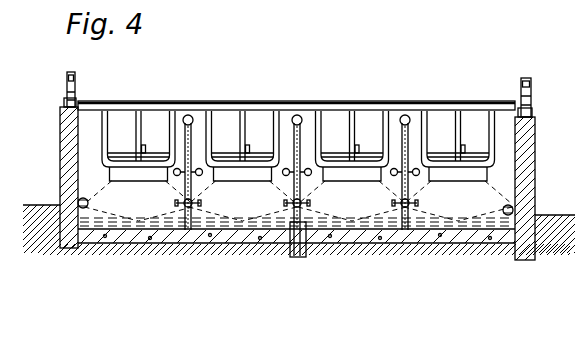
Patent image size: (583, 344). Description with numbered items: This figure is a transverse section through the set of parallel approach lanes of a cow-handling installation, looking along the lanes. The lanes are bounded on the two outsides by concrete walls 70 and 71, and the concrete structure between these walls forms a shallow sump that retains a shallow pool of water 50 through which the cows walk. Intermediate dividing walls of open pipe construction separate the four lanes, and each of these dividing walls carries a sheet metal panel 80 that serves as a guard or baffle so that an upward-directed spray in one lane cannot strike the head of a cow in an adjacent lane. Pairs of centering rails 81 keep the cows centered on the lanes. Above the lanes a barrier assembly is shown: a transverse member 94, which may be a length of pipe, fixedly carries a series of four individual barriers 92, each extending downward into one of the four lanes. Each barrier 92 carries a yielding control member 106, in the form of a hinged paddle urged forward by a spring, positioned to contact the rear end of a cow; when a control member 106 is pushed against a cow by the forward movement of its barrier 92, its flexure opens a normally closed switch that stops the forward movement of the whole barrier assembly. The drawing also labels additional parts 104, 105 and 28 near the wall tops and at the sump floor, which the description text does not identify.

The outside concrete wall 71 is at (572, 247).
The outside concrete wall 70 is at (536, 183).
The pool of water 50 is at (470, 228).
The transverse member 94 is at (233, 103).
The post 105 is at (69, 76).
The bracket 104 is at (66, 103).
The barrier 92 is at (103, 136).
The yielding control member 106 is at (124, 182).
The sheet metal panel 80 is at (194, 138).
The centering rail 81 is at (178, 168).
The sleeve 28 is at (307, 214).